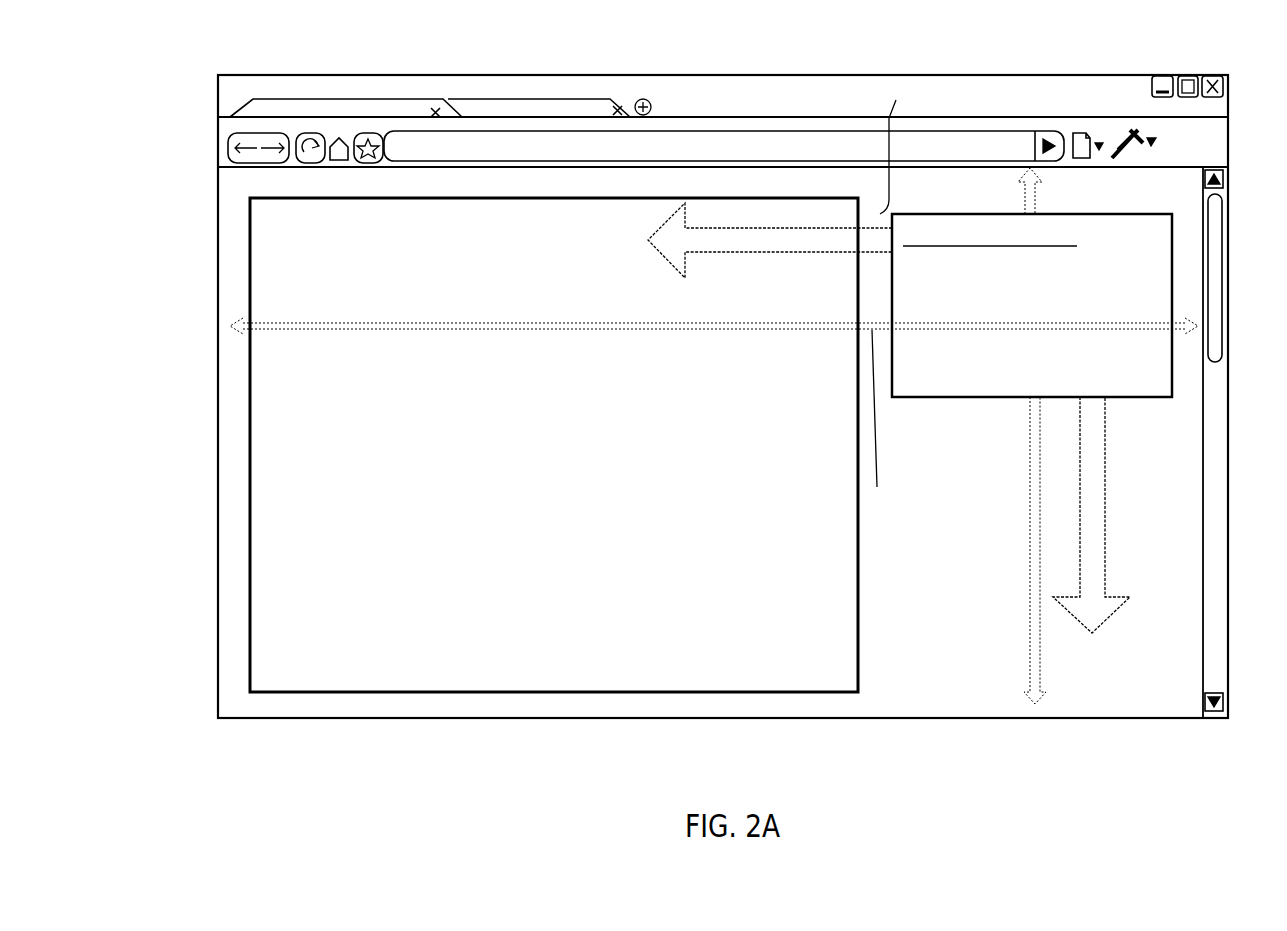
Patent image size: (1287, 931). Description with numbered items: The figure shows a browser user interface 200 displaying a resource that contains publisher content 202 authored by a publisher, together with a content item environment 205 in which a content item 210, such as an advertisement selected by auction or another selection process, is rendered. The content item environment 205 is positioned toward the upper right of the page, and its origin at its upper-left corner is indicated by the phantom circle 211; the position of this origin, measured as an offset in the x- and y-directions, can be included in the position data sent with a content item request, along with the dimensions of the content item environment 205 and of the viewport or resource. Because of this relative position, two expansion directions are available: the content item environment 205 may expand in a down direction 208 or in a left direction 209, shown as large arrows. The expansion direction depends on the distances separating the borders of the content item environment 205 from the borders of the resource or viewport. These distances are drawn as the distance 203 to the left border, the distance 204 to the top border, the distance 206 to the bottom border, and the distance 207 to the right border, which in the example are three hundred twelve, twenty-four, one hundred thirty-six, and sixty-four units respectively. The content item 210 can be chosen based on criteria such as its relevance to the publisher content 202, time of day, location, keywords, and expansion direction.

The user interface 200 is at (190, 90).
The publisher content 202 is at (570, 468).
The distance 203 is at (877, 487).
The distance 204 is at (1189, 336).
The content item environment 205 is at (969, 398).
The distance 206 is at (1033, 578).
The distance 207 is at (1023, 192).
The down direction 208 is at (1105, 565).
The left direction 209 is at (722, 255).
The content item 210 is at (1040, 307).
The phantom circle 211 is at (896, 100).